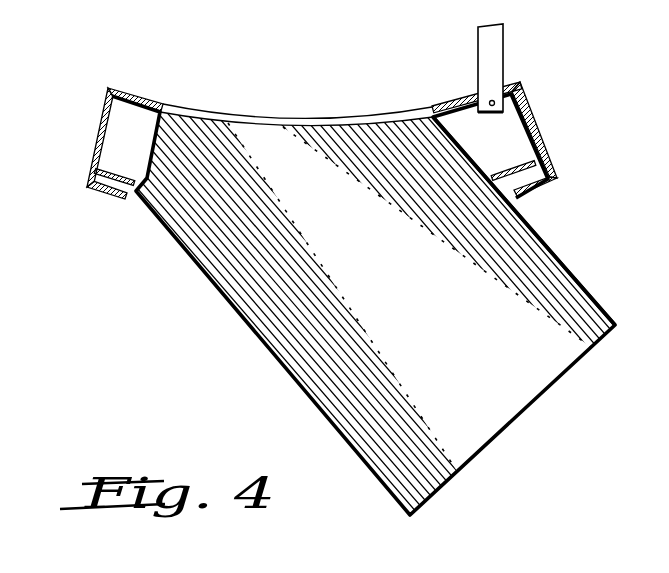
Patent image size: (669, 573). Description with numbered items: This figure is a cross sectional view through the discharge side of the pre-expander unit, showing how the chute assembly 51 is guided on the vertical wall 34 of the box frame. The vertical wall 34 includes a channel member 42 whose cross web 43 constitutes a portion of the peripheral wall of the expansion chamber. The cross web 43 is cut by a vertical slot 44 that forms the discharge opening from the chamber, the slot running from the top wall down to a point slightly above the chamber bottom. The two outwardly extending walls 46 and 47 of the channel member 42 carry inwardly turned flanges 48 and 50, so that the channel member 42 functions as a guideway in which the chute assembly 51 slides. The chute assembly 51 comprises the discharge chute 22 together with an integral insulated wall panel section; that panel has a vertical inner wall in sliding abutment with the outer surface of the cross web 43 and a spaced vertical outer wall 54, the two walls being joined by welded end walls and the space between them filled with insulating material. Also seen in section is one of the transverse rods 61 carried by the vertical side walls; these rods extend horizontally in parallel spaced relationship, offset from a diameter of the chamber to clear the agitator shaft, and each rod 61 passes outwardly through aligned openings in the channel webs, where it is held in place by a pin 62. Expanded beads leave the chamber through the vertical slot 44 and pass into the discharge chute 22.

The discharge chute 22 is at (337, 297).
The vertical wall 34 is at (80, 162).
The channel member 42 is at (566, 149).
The cross web 43 is at (138, 101).
The vertical slot 44 is at (291, 120).
The outwardly extending wall 46 is at (557, 157).
The outwardly extending wall 47 is at (88, 141).
The inwardly turned flange 48 is at (104, 199).
The inwardly turned flange 50 is at (535, 196).
The chute assembly 51 is at (565, 246).
The vertical outer wall 54 is at (90, 192).
The transverse rod 61 is at (497, 40).
The pin 62 is at (520, 96).